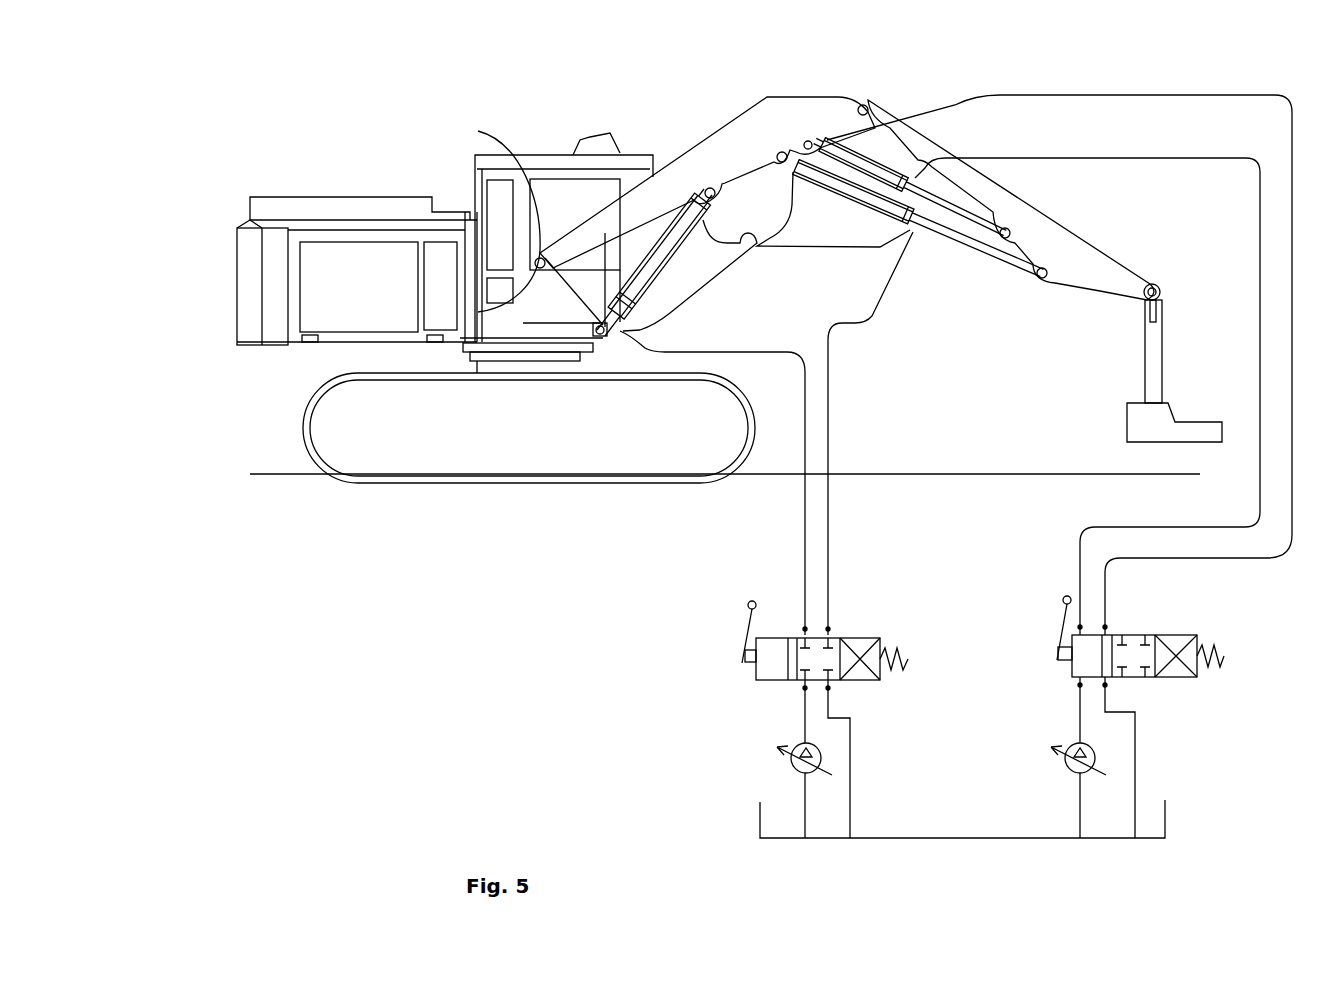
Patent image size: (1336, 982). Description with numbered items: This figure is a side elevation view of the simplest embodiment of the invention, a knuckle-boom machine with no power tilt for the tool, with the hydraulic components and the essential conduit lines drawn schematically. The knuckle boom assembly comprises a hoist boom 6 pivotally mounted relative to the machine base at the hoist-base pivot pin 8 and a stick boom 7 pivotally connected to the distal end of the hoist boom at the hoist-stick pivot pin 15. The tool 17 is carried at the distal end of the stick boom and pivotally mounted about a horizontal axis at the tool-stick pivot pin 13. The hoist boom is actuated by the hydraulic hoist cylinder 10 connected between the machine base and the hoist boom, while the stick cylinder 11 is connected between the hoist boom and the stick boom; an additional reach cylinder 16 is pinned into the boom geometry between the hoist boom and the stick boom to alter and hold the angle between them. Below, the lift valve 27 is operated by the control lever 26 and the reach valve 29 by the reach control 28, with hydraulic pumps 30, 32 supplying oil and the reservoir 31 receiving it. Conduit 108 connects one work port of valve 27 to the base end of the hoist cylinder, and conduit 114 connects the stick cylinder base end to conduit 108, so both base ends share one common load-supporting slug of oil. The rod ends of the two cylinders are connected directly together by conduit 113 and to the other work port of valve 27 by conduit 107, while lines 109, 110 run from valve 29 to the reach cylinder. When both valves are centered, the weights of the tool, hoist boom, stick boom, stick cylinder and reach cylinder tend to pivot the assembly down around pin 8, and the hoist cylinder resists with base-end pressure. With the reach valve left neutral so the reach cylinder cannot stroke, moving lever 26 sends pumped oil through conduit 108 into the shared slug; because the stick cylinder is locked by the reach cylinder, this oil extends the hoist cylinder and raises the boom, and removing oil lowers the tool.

The hoist boom 6 is at (692, 140).
The stick boom 7 is at (932, 165).
The hoist-base pivot pin 8 is at (478, 131).
The hydraulic hoist cylinder 10 is at (673, 220).
The stick cylinder 11 is at (983, 257).
The tool-stick pivot pin 13 is at (1153, 285).
The hoist-stick pivot pin 15 is at (888, 125).
The reach cylinder 16 is at (868, 104).
The tool 17 is at (1145, 387).
The control lever 26 is at (750, 638).
The lift valve 27 is at (883, 645).
The reach control 28 is at (1058, 645).
The reach valve 29 is at (1197, 645).
The hydraulic pump 30 is at (795, 750).
The reservoir 31 is at (760, 823).
The hydraulic pump 32 is at (1066, 750).
The conduit 107 is at (832, 512).
The conduit 108 is at (783, 531).
The hydraulic line 109 is at (1228, 160).
The hydraulic line 110 is at (1108, 95).
The conduit 113 is at (853, 248).
The conduit 114 is at (685, 300).